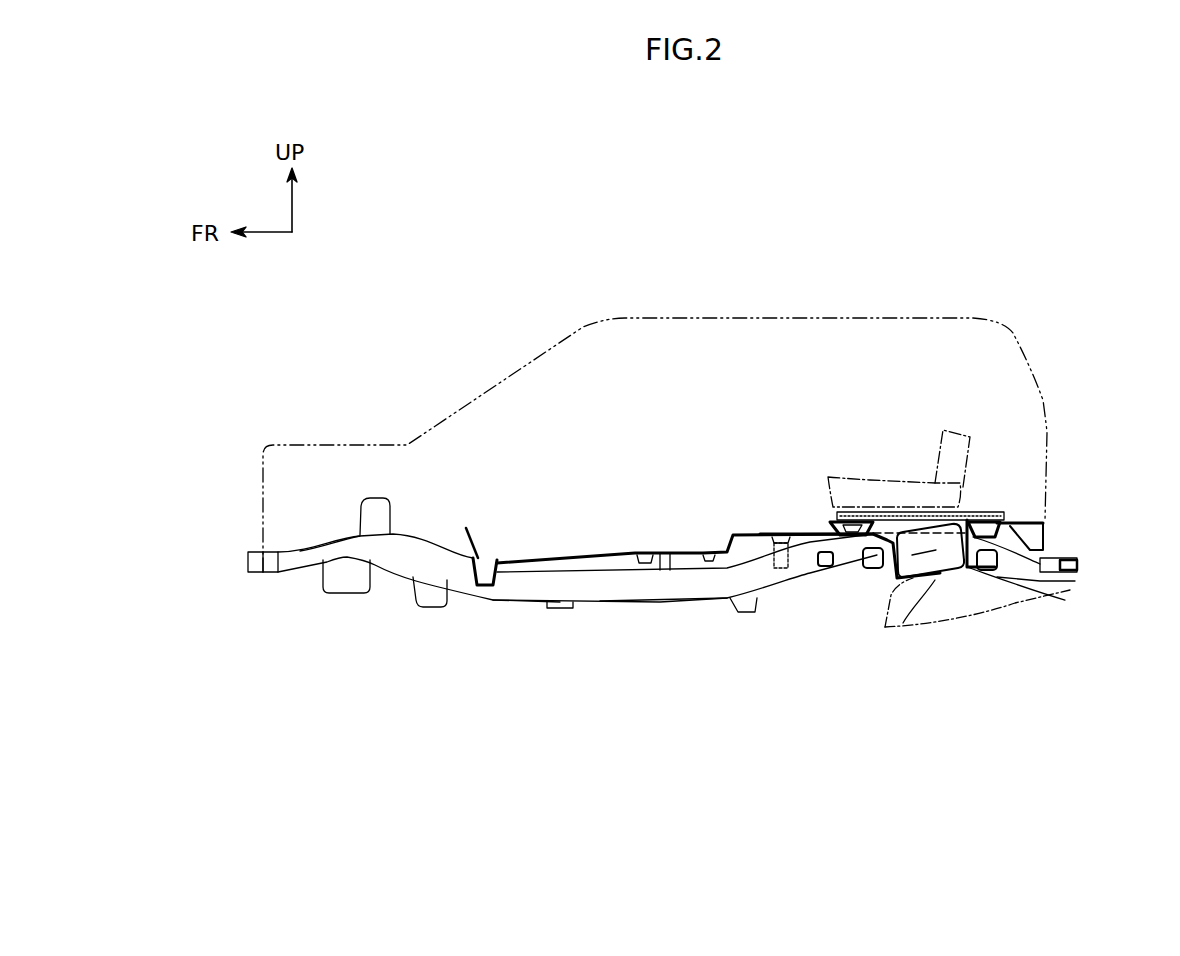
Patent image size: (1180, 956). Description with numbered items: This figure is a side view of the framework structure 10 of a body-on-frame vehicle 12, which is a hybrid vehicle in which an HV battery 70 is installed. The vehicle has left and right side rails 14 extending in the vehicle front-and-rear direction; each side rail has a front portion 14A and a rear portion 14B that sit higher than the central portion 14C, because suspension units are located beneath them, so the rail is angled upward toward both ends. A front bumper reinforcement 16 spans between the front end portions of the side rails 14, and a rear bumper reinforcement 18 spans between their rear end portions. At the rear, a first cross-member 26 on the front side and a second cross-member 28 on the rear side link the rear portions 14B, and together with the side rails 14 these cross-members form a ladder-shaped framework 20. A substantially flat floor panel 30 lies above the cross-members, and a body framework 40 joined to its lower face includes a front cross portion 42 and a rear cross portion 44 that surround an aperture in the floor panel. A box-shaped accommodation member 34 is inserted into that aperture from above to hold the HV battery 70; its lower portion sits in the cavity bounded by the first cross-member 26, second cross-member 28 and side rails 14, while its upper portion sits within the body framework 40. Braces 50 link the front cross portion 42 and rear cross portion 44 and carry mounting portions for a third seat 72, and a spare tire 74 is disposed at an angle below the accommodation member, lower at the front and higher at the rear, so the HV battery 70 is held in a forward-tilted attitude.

The framework structure 10 is at (953, 573).
The body-on-frame vehicle 12 is at (880, 309).
The side rail 14 is at (642, 604).
The front portion 14A is at (343, 548).
The rear portion 14B is at (850, 567).
The central portion 14C is at (667, 592).
The front bumper reinforcement 16 is at (248, 561).
The rear bumper reinforcement 18 is at (1078, 563).
The framework 20 is at (506, 604).
The first cross-member 26 is at (876, 568).
The second cross-member 28 is at (985, 580).
The floor panel 30 is at (590, 558).
The accommodation member 34 is at (980, 570).
The body framework 40 is at (839, 532).
The front cross portion 42 is at (823, 567).
The rear cross portion 44 is at (1023, 580).
The brace 50 is at (980, 510).
The HV battery 70 is at (933, 587).
The third seat 72 is at (873, 478).
The spare tire 74 is at (1075, 592).